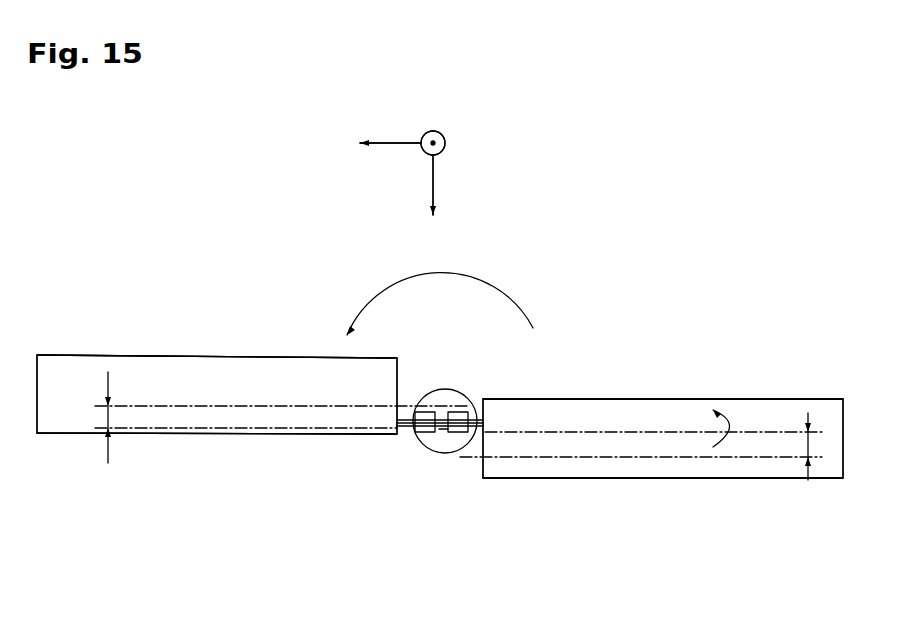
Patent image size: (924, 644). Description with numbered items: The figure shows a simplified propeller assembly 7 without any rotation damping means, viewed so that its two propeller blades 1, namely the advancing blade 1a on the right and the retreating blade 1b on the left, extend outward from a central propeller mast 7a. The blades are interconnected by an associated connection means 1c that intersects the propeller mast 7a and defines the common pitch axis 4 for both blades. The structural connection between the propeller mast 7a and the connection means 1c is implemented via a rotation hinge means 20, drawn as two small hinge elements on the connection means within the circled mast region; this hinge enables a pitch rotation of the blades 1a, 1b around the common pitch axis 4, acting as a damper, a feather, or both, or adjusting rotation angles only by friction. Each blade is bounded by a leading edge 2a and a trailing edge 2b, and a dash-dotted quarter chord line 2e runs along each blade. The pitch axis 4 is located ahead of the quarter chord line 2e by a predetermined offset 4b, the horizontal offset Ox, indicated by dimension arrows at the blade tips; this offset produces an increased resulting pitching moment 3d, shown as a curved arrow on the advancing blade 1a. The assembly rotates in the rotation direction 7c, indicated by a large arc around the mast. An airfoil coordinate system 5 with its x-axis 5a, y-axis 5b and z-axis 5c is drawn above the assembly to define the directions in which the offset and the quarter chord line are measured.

The propeller blade 1 is at (292, 448).
The advancing blade 1a is at (688, 417).
The retreating blade 1b is at (200, 378).
The associated connection means 1c is at (405, 430).
The leading edge 2a is at (237, 434).
The trailing edge 2b is at (240, 356).
The quarter chord line 2e is at (138, 406).
The resulting pitching moment 3d is at (735, 441).
The pitch axis 4 is at (630, 430).
The offset 4b is at (108, 417).
The airfoil coordinate system 5 is at (478, 120).
The x-axis 5a is at (432, 178).
The y-axis 5b is at (393, 143).
The z-axis 5c is at (442, 151).
The propeller assembly 7 is at (580, 323).
The propeller mast 7a is at (464, 395).
The rotation direction 7c is at (483, 282).
The rotation hinge means 20 is at (443, 440).